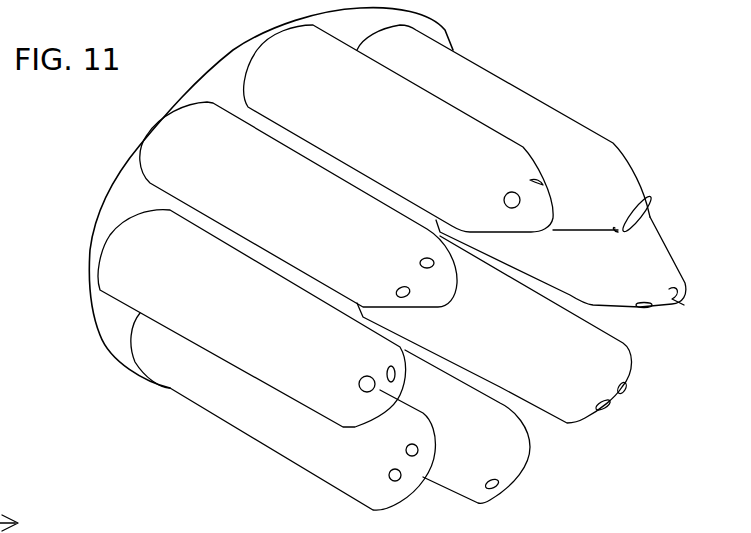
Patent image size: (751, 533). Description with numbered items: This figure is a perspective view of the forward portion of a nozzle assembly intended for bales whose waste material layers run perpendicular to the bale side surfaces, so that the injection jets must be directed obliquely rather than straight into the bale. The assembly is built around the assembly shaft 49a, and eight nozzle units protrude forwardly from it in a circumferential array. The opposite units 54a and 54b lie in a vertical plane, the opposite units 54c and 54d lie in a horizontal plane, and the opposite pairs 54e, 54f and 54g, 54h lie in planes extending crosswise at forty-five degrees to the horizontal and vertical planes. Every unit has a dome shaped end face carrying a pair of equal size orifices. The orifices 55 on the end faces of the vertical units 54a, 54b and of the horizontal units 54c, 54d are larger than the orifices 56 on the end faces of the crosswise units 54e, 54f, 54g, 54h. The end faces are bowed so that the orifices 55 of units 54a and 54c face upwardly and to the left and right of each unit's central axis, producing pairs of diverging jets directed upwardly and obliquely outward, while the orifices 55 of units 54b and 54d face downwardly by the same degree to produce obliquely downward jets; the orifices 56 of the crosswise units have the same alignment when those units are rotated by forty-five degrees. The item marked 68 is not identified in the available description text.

The assembly shaft 49a is at (217, 85).
The nozzle unit 54a is at (434, 153).
The nozzle unit 54b is at (500, 455).
The nozzle unit 54c is at (308, 351).
The nozzle unit 54d is at (620, 271).
The nozzle unit 54e is at (340, 226).
The nozzle unit 54f is at (528, 341).
The nozzle unit 54g is at (612, 178).
The nozzle unit 54h is at (366, 458).
The orifices 55 is at (535, 182).
The orifices 56 is at (420, 262).
The lead wire direction 68 is at (24, 523).